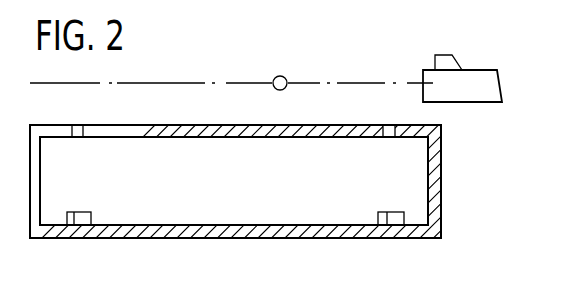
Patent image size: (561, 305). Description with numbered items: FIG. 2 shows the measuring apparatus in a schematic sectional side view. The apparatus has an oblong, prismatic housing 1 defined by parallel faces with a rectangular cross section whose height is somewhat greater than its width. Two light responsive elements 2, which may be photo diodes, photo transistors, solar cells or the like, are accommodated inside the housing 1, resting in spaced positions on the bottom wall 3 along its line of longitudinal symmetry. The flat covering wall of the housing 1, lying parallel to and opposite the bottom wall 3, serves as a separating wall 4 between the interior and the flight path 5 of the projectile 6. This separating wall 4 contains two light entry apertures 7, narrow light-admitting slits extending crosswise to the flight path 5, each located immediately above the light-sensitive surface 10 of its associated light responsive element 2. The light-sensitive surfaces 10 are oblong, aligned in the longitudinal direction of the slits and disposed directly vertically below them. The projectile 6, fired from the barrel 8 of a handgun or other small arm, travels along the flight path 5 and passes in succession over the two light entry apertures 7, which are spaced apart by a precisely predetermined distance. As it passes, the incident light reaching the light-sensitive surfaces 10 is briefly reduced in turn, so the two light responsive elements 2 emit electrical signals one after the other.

The housing 1 is at (280, 150).
The light responsive elements 2 is at (82, 214).
The bottom wall 3 is at (63, 228).
The separating wall 4 is at (145, 130).
The flight path 5 is at (181, 83).
The projectile 6 is at (284, 78).
The light entry apertures 7 is at (77, 128).
The barrel 8 is at (480, 72).
The light-sensitive surfaces 10 is at (74, 212).